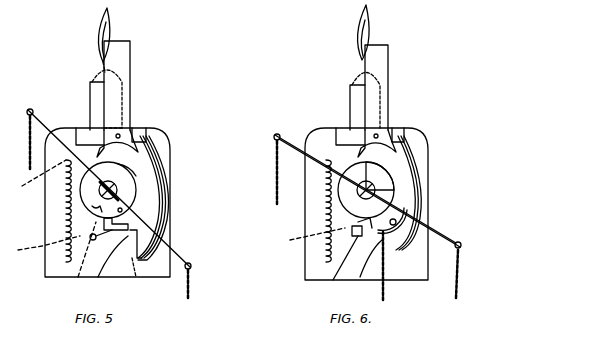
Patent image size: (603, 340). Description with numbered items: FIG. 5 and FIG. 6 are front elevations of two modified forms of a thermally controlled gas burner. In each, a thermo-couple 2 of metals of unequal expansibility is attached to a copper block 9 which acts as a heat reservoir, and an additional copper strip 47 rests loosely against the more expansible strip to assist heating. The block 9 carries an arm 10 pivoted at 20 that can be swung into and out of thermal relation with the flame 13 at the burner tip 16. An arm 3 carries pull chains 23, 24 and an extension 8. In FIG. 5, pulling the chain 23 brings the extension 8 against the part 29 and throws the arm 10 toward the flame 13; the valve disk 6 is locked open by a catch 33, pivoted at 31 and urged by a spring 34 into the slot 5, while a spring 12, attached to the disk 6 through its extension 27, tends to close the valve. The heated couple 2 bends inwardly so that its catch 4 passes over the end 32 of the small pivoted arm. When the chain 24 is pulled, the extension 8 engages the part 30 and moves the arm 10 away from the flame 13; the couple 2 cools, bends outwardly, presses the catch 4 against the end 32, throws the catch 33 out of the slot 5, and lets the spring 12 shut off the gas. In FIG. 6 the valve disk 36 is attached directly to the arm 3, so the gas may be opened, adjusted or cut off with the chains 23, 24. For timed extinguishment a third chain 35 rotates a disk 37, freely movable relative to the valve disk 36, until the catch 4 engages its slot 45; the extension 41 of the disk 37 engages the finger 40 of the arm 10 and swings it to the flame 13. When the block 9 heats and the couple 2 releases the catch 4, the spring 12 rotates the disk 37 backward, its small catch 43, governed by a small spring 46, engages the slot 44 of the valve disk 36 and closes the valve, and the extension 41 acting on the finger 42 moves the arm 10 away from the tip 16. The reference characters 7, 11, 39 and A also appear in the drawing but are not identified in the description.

In FIG. 5, the thermo-couple 2 is at (165, 170).
In FIG. 6, the thermo-couple 2 is at (420, 210).
In FIG. 5, the arm 3 is at (109, 189).
In FIG. 6, the arm 3 is at (450, 240).
In FIG. 6, the catch 4 is at (392, 232).
In FIG. 5, the slot 5 is at (96, 203).
In FIG. 5, the valve disk 6 is at (130, 191).
In FIG. 5, the pin 7 is at (123, 211).
In FIG. 5, the extension 8 is at (142, 180).
In FIG. 5, the block 9 is at (148, 140).
In FIG. 6, the block 9 is at (397, 138).
In FIG. 5, the arm 10 is at (125, 62).
In FIG. 6, the arm 10 is at (382, 69).
In FIG. 5, the spring anchor 11 is at (44, 245).
In FIG. 6, the spring anchor 11 is at (308, 236).
In FIG. 5, the spring 12 is at (64, 203).
In FIG. 6, the spring 12 is at (324, 250).
In FIG. 5, the flame 13 is at (101, 36).
In FIG. 6, the flame 13 is at (360, 36).
In FIG. 6, the burner tip 16 is at (358, 78).
In FIG. 5, the pivot 20 is at (121, 137).
In FIG. 5, the pull chain 23 is at (190, 289).
In FIG. 6, the pull chain 23 is at (460, 273).
In FIG. 5, the pull chain 24 is at (29, 144).
In FIG. 6, the pull chain 24 is at (264, 173).
In FIG. 5, the extension 27 is at (34, 175).
In FIG. 5, the part 29 is at (160, 160).
In FIG. 5, the part 30 is at (97, 155).
In FIG. 5, the pivot 31 is at (106, 241).
In FIG. 5, the end of small pivoted arm 32 is at (110, 267).
In FIG. 5, the catch 33 is at (102, 226).
In FIG. 5, the spring 34 is at (80, 277).
In FIG. 6, the third chain 35 is at (386, 288).
In FIG. 6, the valve disk 36 is at (395, 170).
In FIG. 6, the disk 37 is at (392, 183).
In FIG. 6, the shaft 39 is at (365, 195).
In FIG. 6, the finger 40 is at (404, 150).
In FIG. 6, the extension 41 is at (410, 160).
In FIG. 6, the finger 42 is at (360, 155).
In FIG. 6, the small catch 43 is at (350, 234).
In FIG. 6, the slot 44 is at (366, 259).
In FIG. 6, the slot 45 is at (337, 267).
In FIG. 6, the small spring 46 is at (366, 238).
In FIG. 5, the additional strip 47 is at (150, 150).
In FIG. 6, the additional strip 47 is at (400, 236).
In FIG. 5, the end portion A is at (139, 260).